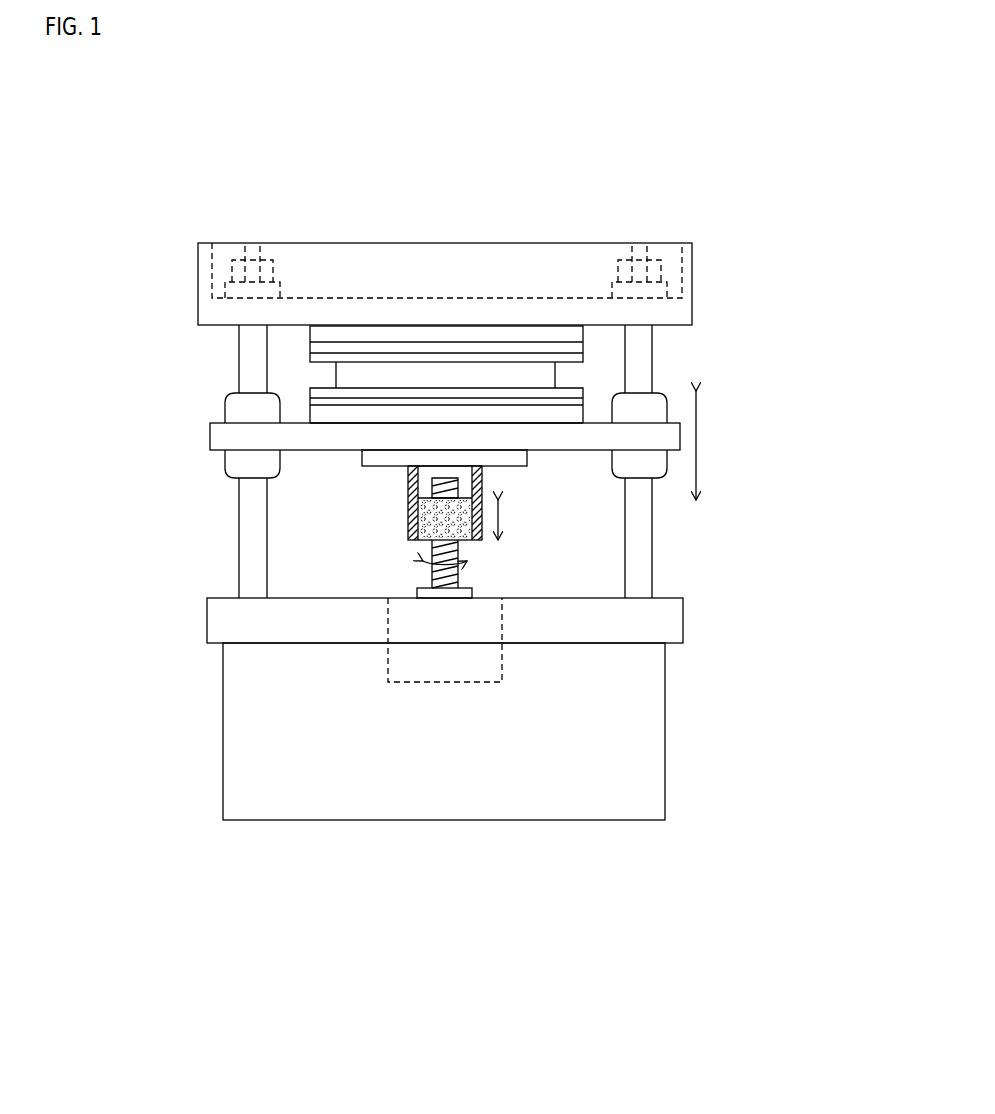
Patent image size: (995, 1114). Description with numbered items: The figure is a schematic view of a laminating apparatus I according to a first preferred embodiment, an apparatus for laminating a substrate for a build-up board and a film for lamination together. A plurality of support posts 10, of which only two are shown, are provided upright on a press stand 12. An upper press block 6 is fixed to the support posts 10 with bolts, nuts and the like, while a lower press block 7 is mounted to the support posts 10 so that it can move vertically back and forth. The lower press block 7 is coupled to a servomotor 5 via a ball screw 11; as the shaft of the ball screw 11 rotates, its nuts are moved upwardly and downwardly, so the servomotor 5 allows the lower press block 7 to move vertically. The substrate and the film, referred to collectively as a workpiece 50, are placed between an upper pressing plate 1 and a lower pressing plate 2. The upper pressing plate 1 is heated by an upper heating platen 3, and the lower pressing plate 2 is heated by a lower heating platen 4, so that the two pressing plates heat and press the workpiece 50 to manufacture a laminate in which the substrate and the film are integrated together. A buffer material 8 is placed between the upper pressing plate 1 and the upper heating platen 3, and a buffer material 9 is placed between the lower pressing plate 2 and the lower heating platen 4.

The upper pressing plate 1 is at (573, 355).
The lower pressing plate 2 is at (320, 393).
The upper heating platen 3 is at (448, 335).
The lower heating platen 4 is at (320, 413).
The servomotor 5 is at (445, 660).
The upper press block 6 is at (198, 278).
The lower press block 7 is at (208, 437).
The buffer material 8 is at (509, 345).
The buffer material 9 is at (318, 402).
The support posts 10 is at (250, 538).
The ball screw 11 is at (408, 528).
The press stand 12 is at (218, 627).
The workpiece 50 is at (542, 378).
The laminating apparatus I is at (670, 189).